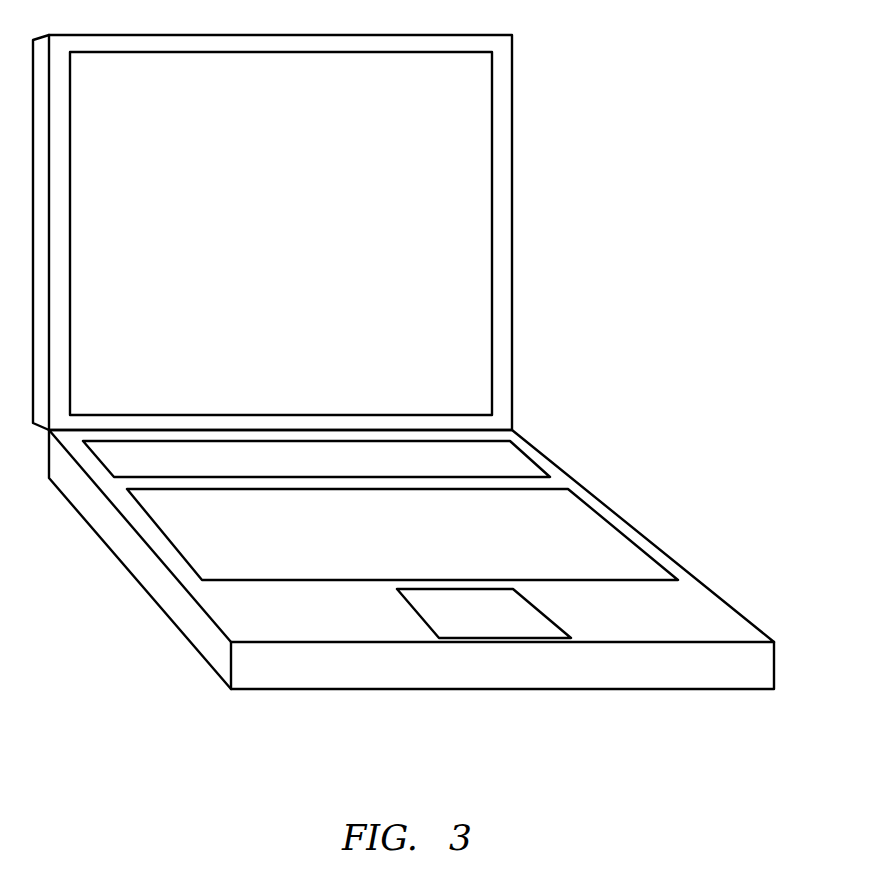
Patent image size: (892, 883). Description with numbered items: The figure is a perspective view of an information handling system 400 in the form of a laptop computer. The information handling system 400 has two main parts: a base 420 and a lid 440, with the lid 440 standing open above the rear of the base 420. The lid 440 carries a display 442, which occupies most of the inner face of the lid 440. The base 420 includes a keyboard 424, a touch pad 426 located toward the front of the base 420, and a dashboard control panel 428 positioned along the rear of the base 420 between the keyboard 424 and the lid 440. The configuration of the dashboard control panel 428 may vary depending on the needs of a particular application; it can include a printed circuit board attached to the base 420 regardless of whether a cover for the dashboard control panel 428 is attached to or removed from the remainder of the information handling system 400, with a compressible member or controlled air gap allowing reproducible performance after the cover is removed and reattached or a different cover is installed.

The information handling system 400 is at (742, 119).
The base 420 is at (729, 617).
The keyboard 424 is at (411, 545).
The touch pad 426 is at (503, 622).
The dashboard control panel 428 is at (335, 470).
The lid 440 is at (512, 248).
The display 442 is at (300, 293).